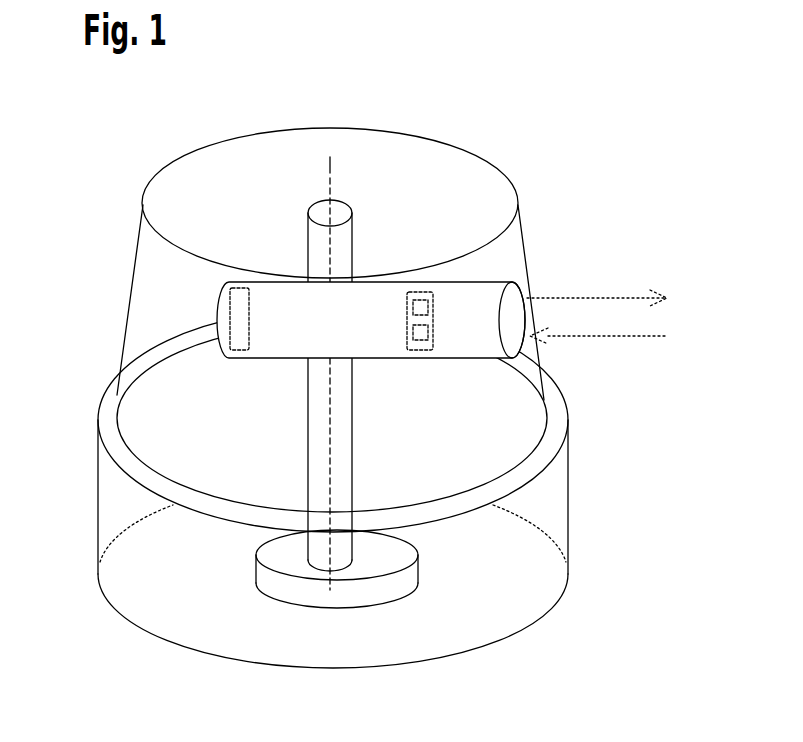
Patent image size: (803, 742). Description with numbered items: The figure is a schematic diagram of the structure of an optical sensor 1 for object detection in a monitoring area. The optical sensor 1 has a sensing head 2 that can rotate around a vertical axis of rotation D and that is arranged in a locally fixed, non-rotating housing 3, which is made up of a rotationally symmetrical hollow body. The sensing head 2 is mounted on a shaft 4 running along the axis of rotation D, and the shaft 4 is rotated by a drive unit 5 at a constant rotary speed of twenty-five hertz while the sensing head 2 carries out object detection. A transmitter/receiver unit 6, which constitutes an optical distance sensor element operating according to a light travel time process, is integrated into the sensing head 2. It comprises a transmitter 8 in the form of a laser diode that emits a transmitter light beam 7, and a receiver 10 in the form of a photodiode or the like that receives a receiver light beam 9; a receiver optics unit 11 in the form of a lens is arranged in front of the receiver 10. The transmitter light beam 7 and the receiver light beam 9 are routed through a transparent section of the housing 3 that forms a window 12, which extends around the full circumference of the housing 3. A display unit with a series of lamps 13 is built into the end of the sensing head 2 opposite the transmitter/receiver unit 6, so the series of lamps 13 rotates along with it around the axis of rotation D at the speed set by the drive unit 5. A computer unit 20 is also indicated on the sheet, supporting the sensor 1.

The optical sensor 1 is at (365, 378).
The sensing head 2 is at (372, 367).
The housing 3 is at (354, 244).
The shaft 4 is at (340, 233).
The drive unit 5 is at (405, 553).
The transmitter/receiver unit 6 is at (454, 356).
The transmitter light beam 7 is at (622, 300).
The transmitter 8 is at (435, 311).
The receiver light beam 9 is at (625, 337).
The receiver 10 is at (440, 335).
The receiver optics unit 11 is at (523, 348).
The window 12 is at (526, 256).
The series of lamps 13 is at (257, 328).
The computer unit 20 is at (100, 403).
The axis of rotation D is at (331, 172).